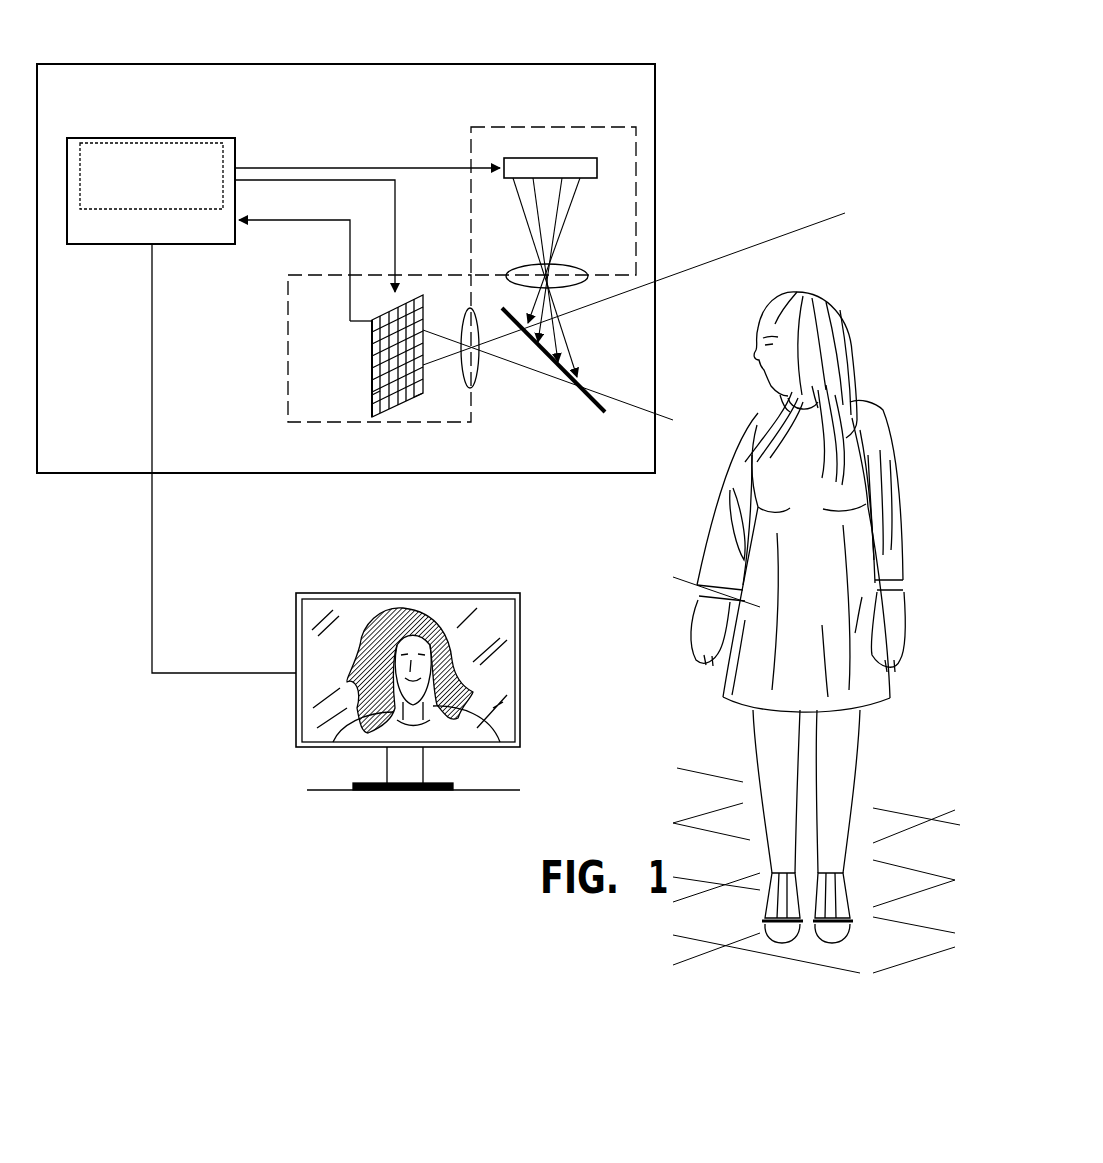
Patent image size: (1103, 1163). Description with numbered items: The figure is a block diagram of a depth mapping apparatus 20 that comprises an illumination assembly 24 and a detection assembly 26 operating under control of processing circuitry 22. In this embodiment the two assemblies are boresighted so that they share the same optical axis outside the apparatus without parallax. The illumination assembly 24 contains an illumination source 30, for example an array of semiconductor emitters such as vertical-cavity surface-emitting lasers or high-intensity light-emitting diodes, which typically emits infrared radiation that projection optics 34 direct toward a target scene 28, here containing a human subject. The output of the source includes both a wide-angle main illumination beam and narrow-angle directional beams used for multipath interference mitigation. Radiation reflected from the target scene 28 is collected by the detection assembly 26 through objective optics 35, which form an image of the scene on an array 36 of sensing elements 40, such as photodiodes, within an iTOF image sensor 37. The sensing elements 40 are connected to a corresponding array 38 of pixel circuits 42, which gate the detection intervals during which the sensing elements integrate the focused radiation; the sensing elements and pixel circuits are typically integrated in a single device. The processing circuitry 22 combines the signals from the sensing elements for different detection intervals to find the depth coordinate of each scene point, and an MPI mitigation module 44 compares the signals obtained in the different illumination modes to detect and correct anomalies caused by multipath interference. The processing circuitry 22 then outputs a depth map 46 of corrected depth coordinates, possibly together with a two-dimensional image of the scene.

The depth mapping apparatus 20 is at (268, 63).
The processing circuitry 22 is at (152, 137).
The illumination assembly 24 is at (523, 127).
The detection assembly 26 is at (288, 352).
The target scene 28 is at (857, 350).
The illumination source 30 is at (597, 170).
The projection optics 34 is at (588, 272).
The objective optics 35 is at (482, 380).
The array of sensing elements 36 is at (433, 297).
The iTOF image sensor 37 is at (423, 427).
The array of pixel circuits 38 is at (372, 350).
The sensing elements 40 is at (423, 383).
The pixel circuits 42 is at (372, 395).
The MPI mitigation module 44 is at (117, 153).
The depth map 46 is at (520, 680).